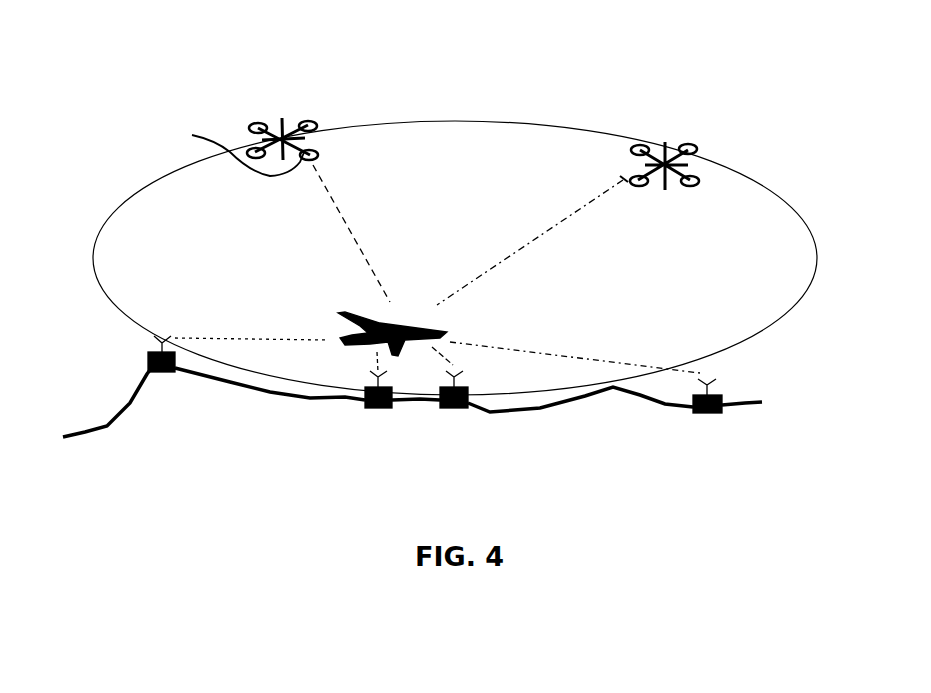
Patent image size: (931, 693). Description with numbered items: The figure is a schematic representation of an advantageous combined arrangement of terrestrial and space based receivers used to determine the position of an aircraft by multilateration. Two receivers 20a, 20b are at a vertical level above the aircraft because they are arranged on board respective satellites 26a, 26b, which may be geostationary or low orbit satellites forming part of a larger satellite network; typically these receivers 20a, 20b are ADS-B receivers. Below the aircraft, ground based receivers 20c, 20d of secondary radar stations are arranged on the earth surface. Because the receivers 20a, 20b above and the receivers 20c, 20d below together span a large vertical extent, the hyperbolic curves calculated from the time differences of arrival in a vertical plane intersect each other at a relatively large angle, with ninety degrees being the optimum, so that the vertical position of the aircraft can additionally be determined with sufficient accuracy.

The receiver 20a is at (222, 150).
The receiver 20b is at (624, 176).
The ground based receiver 20c is at (162, 373).
The ground based receiver 20d is at (707, 414).
The satellite 26a is at (280, 128).
The satellite 26b is at (670, 148).